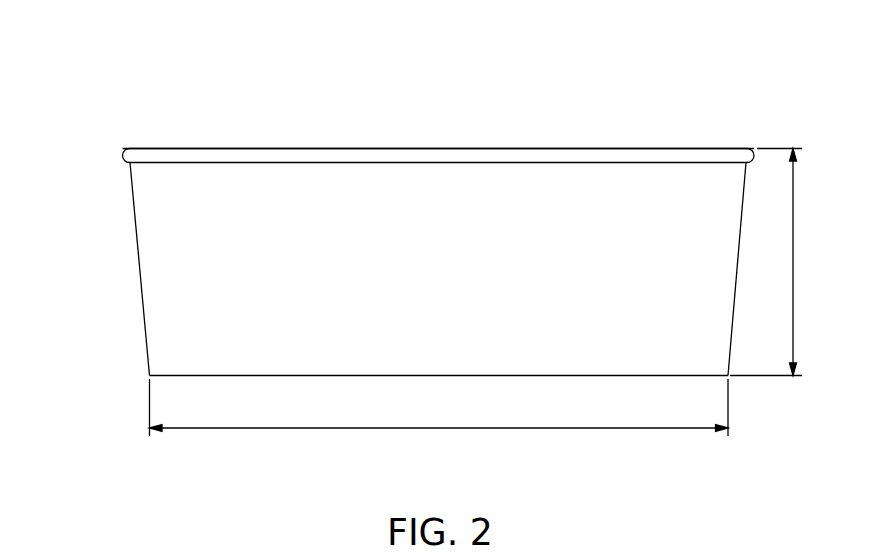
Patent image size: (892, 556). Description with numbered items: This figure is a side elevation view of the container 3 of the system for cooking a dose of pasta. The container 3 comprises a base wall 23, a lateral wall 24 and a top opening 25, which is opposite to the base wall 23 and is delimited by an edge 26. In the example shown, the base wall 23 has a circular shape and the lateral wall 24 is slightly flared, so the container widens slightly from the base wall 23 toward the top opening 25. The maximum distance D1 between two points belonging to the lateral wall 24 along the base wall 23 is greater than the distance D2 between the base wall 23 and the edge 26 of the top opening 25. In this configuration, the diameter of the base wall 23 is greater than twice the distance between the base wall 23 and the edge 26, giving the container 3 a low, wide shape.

The container 3 is at (398, 194).
The base wall 23 is at (428, 375).
The lateral wall 24 is at (141, 298).
The top opening 25 is at (653, 148).
The edge 26 is at (333, 148).
The maximum distance D1 is at (439, 419).
The distance D2 is at (781, 262).